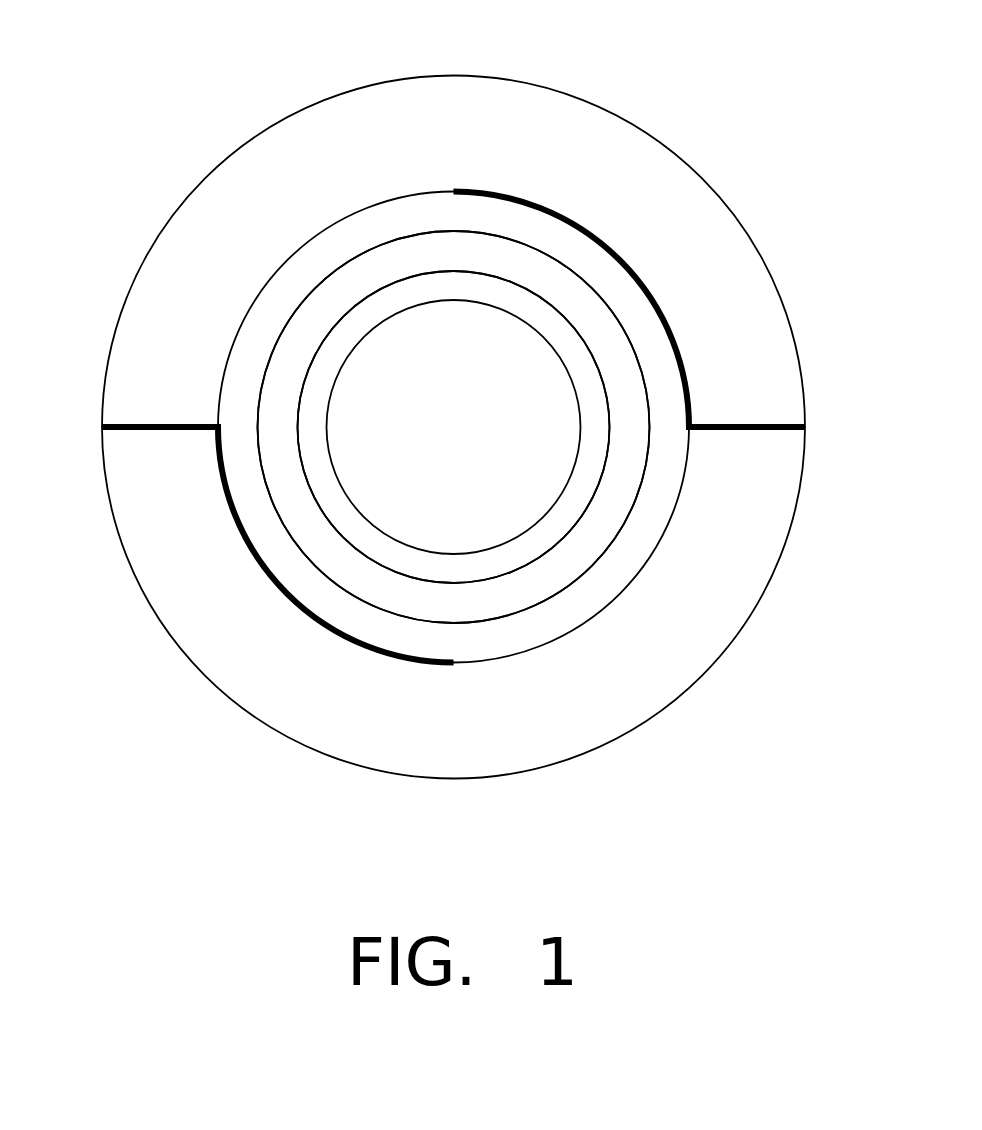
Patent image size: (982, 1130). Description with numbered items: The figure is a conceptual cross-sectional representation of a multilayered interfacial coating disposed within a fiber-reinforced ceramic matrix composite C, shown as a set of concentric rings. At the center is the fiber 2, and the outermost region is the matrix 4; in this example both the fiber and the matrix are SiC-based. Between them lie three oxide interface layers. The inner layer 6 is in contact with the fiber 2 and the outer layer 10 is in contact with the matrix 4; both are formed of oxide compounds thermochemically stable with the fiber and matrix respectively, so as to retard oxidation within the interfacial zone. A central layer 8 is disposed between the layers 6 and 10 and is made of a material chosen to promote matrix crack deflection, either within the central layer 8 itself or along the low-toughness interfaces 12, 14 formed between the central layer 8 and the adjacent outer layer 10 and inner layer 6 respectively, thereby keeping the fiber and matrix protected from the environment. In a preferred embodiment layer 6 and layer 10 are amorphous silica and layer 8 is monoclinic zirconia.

The fiber-reinforced ceramic matrix composite C is at (600, 84).
The fiber 2 is at (477, 451).
The matrix 4 is at (478, 738).
The inner layer 6 is at (382, 283).
The central layer 8 is at (281, 332).
The outer layer 10 is at (239, 539).
The low-toughness interface 12 is at (578, 547).
The low-toughness interface 14 is at (650, 515).